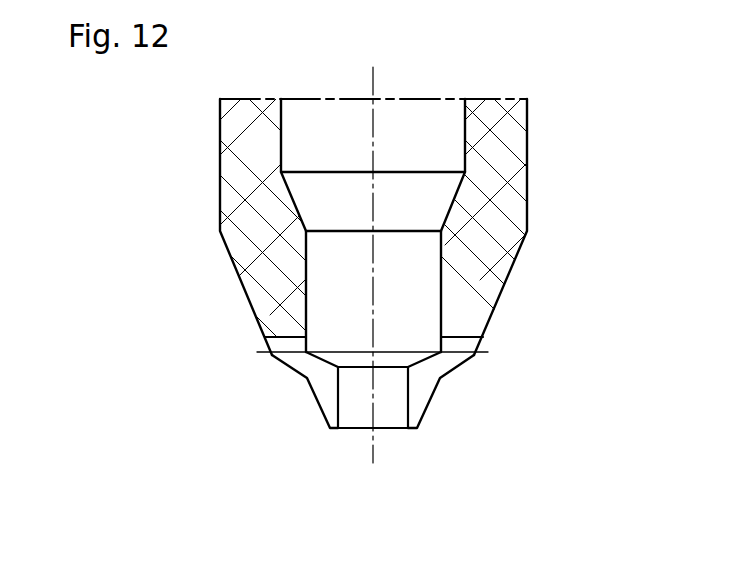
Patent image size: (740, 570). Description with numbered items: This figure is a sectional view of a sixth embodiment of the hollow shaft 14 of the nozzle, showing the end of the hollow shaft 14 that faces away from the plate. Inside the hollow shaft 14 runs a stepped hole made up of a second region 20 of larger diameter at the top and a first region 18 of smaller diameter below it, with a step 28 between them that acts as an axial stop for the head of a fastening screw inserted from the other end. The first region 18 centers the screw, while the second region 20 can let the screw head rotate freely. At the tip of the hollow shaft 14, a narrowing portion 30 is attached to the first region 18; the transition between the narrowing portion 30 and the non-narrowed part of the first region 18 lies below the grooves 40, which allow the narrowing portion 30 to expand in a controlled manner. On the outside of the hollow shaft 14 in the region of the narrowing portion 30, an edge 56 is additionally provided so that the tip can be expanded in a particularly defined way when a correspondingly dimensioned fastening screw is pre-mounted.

The hollow shaft 14 is at (220, 125).
The first region 18 is at (442, 258).
The second region 20 is at (467, 120).
The step 28 is at (295, 207).
The edge 56 is at (302, 378).
The grooves 40 is at (427, 370).
The narrowing portion 30 is at (355, 392).